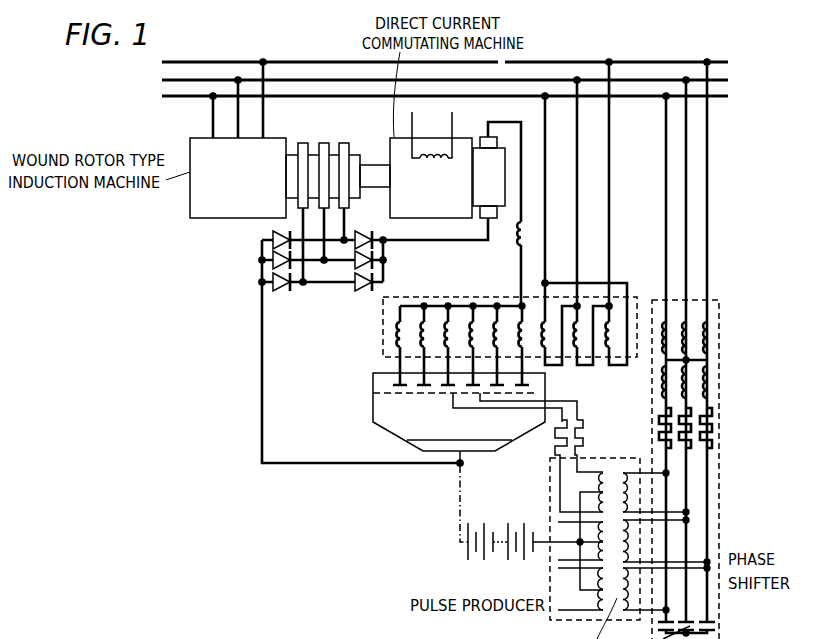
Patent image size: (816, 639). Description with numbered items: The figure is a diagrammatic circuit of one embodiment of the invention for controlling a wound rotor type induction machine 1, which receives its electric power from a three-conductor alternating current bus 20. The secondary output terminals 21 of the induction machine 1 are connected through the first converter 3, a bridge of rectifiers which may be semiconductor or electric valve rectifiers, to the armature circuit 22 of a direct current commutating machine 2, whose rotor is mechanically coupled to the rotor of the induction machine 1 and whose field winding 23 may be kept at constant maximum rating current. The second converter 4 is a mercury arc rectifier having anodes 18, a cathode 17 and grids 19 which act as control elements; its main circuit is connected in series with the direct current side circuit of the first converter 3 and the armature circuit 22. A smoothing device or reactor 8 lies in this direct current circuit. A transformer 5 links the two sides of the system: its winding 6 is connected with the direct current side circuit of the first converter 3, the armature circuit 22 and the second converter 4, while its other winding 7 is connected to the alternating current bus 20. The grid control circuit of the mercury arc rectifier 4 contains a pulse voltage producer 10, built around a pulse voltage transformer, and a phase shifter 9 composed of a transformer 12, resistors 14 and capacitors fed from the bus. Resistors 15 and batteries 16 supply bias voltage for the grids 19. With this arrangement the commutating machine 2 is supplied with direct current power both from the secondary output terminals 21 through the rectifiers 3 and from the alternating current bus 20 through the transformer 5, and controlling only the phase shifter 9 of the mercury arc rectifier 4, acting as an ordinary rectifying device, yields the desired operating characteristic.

The wound rotor type induction machine 1 is at (238, 178).
The direct current commutating machine 2 is at (431, 178).
The first converter 3 is at (380, 275).
The second converter (mercury arc rectifier) 4 is at (453, 413).
The transformer 5 is at (632, 298).
The winding 6 is at (397, 325).
The other winding 7 is at (584, 335).
The smoothing device or reactor 8 is at (515, 240).
The phase shifter 9 is at (674, 469).
The pulse voltage producer 10 is at (548, 587).
The transformer 12 is at (700, 374).
The resistors 14 is at (664, 430).
The resistors 15 is at (559, 440).
The batteries 16 is at (505, 533).
The cathode 17 is at (407, 443).
The anodes 18 is at (400, 384).
The grids 19 is at (395, 393).
The alternating current bus 20 is at (316, 96).
The secondary output terminals 21 is at (344, 146).
The armature circuit 22 is at (489, 177).
The field winding 23 is at (428, 152).